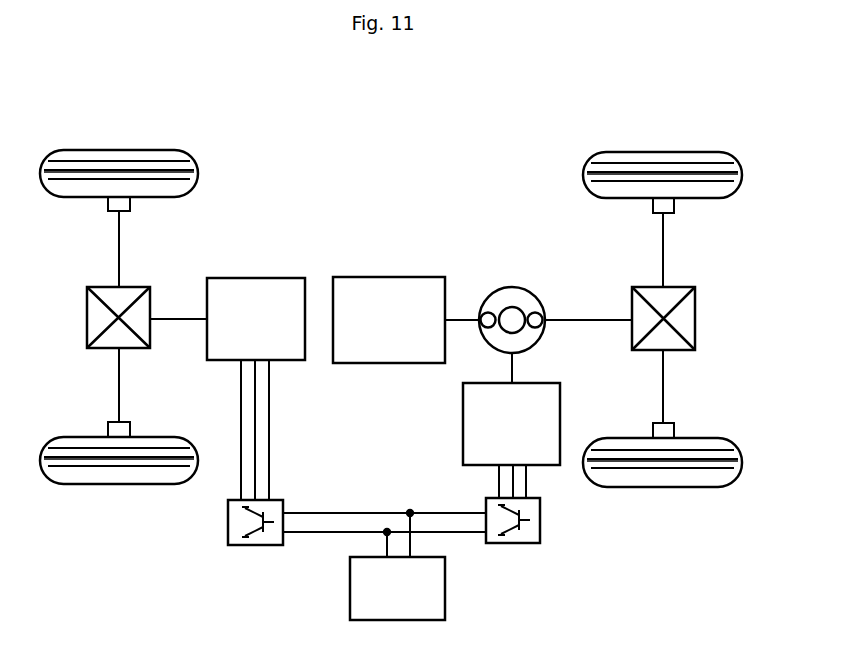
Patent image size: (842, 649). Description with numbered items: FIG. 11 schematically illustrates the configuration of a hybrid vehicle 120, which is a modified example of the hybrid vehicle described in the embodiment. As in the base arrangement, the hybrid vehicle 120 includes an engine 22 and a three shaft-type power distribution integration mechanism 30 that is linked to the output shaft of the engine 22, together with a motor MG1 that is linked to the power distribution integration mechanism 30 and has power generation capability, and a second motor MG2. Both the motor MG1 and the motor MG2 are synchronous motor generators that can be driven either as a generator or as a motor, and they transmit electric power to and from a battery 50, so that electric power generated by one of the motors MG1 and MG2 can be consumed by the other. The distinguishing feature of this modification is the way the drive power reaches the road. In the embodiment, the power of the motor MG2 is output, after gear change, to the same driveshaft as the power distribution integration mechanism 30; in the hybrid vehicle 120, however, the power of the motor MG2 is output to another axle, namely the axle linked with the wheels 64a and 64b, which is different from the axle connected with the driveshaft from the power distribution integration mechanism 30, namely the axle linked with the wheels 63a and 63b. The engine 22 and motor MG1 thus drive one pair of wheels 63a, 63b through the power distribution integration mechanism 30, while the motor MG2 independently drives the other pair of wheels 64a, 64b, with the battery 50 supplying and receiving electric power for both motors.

The hybrid vehicle 120 is at (430, 125).
The wheel 64a is at (119, 150).
The wheel 64b is at (119, 486).
The wheel 63a is at (663, 152).
The wheel 63b is at (663, 487).
The motor MG2 is at (254, 278).
The motor MG1 is at (463, 422).
The engine 22 is at (390, 277).
The power distribution integration mechanism 30 is at (512, 287).
The battery 50 is at (445, 587).